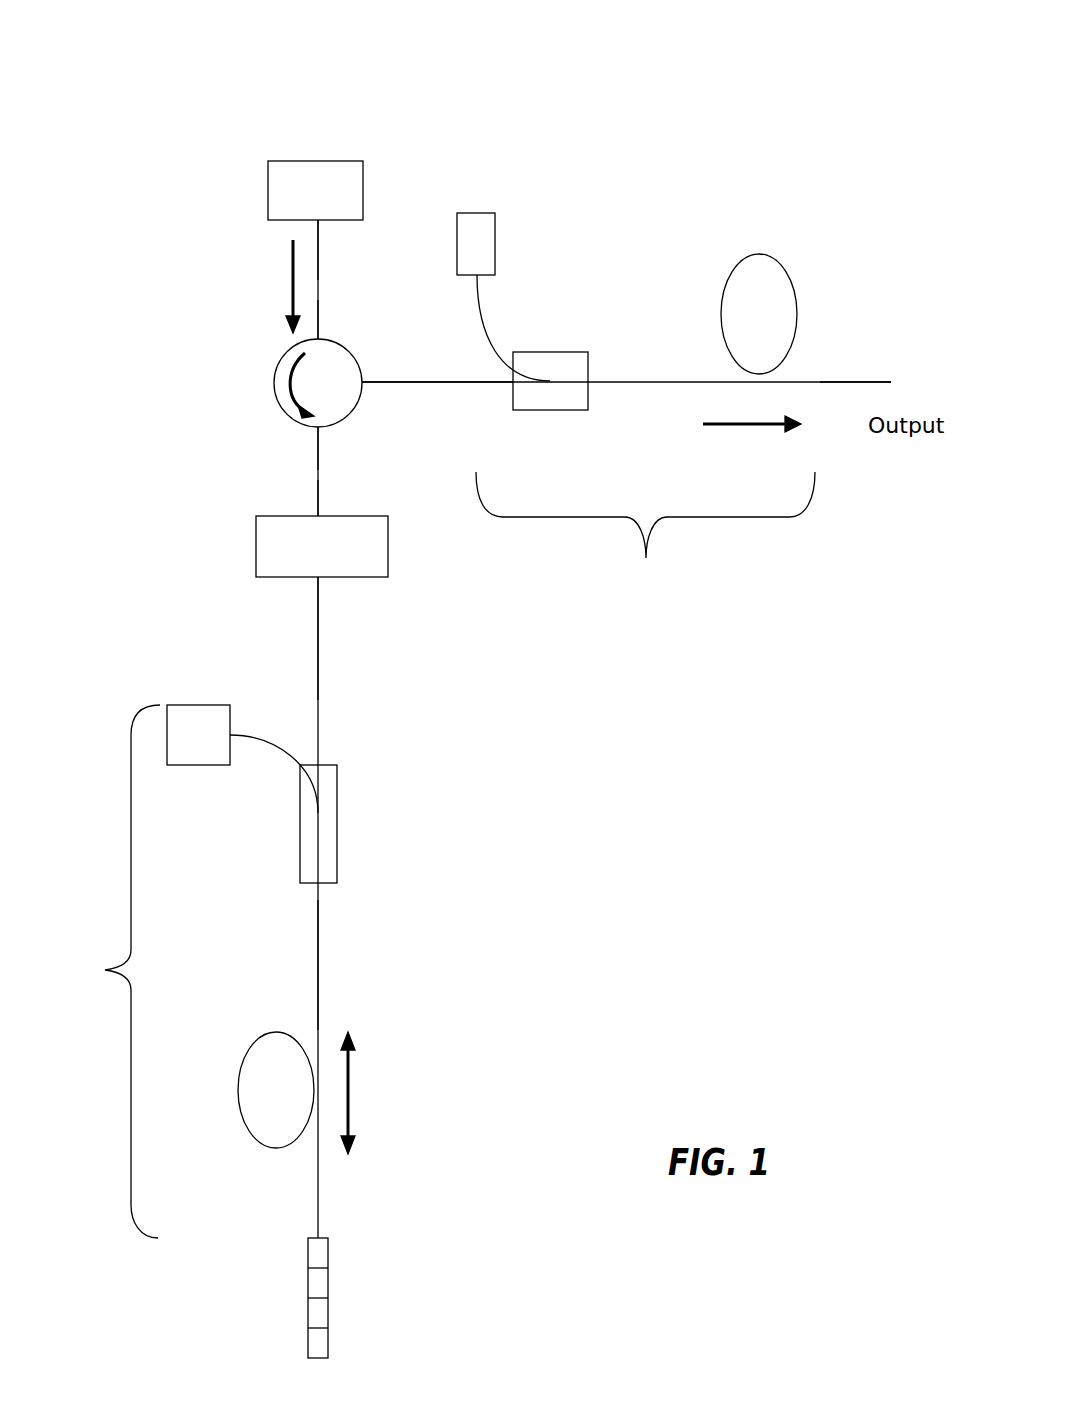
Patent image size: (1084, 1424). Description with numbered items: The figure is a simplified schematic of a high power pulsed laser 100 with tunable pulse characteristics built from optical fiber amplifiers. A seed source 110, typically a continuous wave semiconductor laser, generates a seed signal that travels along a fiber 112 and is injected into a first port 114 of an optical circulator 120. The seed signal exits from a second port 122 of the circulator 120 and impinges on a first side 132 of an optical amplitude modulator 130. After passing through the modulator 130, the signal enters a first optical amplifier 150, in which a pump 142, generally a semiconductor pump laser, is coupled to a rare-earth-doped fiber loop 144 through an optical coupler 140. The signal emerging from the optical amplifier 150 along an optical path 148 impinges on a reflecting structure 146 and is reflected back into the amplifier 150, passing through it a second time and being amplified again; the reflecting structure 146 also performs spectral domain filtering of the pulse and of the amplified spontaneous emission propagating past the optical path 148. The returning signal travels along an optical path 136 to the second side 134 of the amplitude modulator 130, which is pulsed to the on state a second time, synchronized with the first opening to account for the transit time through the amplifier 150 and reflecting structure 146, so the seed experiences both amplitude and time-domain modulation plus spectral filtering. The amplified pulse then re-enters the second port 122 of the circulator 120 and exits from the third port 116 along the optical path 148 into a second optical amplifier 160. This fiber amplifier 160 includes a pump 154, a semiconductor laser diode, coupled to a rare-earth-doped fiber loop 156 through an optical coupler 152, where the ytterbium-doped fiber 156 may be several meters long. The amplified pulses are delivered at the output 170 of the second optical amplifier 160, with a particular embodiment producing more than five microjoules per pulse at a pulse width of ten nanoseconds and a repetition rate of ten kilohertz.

The high power pulsed laser 100 is at (622, 60).
The seed source 110 is at (338, 160).
The seed output fiber 112 is at (325, 222).
The first port 114 is at (328, 340).
The third port 116 is at (352, 408).
The optical circulator 120 is at (276, 383).
The second port 122 is at (304, 430).
The optical amplitude modulator 130 is at (256, 543).
The first side 132 is at (307, 515).
The second side 134 is at (287, 578).
The optical path 136 is at (320, 660).
The optical coupler 140 is at (337, 823).
The pump 142 is at (200, 703).
The rare-earth-doped fiber loop 144 is at (277, 1148).
The reflecting structure 146 is at (328, 1312).
The optical path 148 is at (410, 383).
The optical amplifier 150 is at (108, 971).
The optical coupler 152 is at (533, 410).
The pump 154 is at (477, 213).
The rare-earth-doped fiber loop 156 is at (760, 252).
The second optical amplifier 160 is at (645, 535).
The output 170 is at (852, 381).